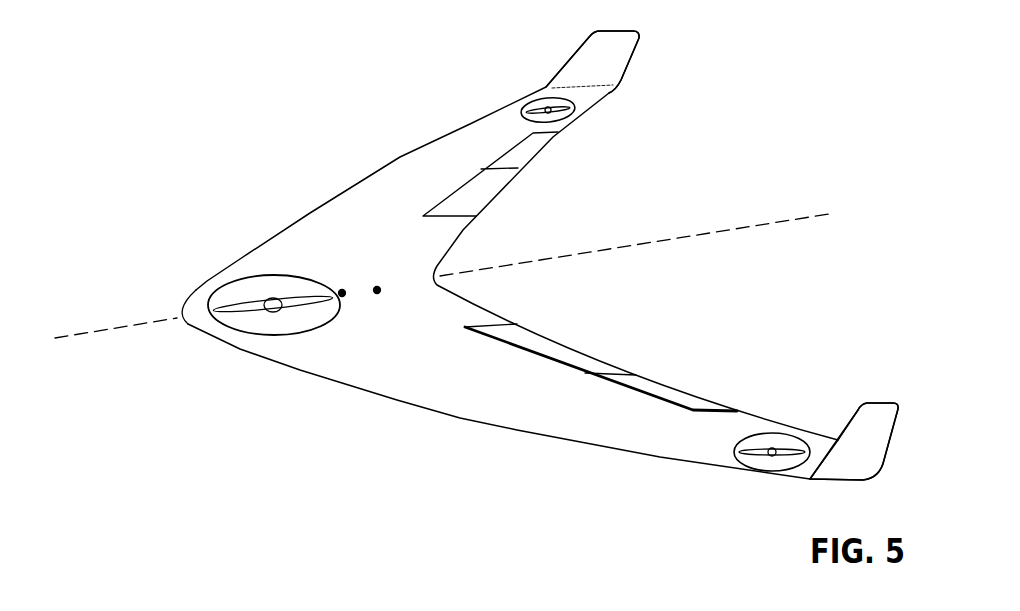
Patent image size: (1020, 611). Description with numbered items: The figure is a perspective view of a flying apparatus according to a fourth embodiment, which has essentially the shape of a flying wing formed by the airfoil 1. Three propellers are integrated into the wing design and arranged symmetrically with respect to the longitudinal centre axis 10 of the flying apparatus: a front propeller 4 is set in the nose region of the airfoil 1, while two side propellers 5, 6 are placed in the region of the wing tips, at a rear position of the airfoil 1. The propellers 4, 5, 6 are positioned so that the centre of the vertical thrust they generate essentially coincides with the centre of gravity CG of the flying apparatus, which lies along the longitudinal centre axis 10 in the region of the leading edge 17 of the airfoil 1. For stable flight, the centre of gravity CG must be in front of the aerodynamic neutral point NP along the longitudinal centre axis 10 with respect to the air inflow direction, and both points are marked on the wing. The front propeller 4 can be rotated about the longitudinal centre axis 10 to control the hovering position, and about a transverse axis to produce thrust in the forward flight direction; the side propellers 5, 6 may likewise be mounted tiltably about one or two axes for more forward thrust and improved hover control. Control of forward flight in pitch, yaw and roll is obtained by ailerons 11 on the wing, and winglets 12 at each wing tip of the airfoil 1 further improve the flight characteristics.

The airfoil 1 is at (430, 395).
The front propeller 4 is at (230, 311).
The side propeller 5 is at (768, 467).
The side propeller 6 is at (523, 108).
The longitudinal centre axis 10 is at (777, 221).
The ailerons 11 is at (567, 353).
The winglets 12 is at (620, 55).
The leading edge 17 is at (300, 373).
The centre of gravity CG is at (342, 293).
The aerodynamic neutral point NP is at (377, 290).